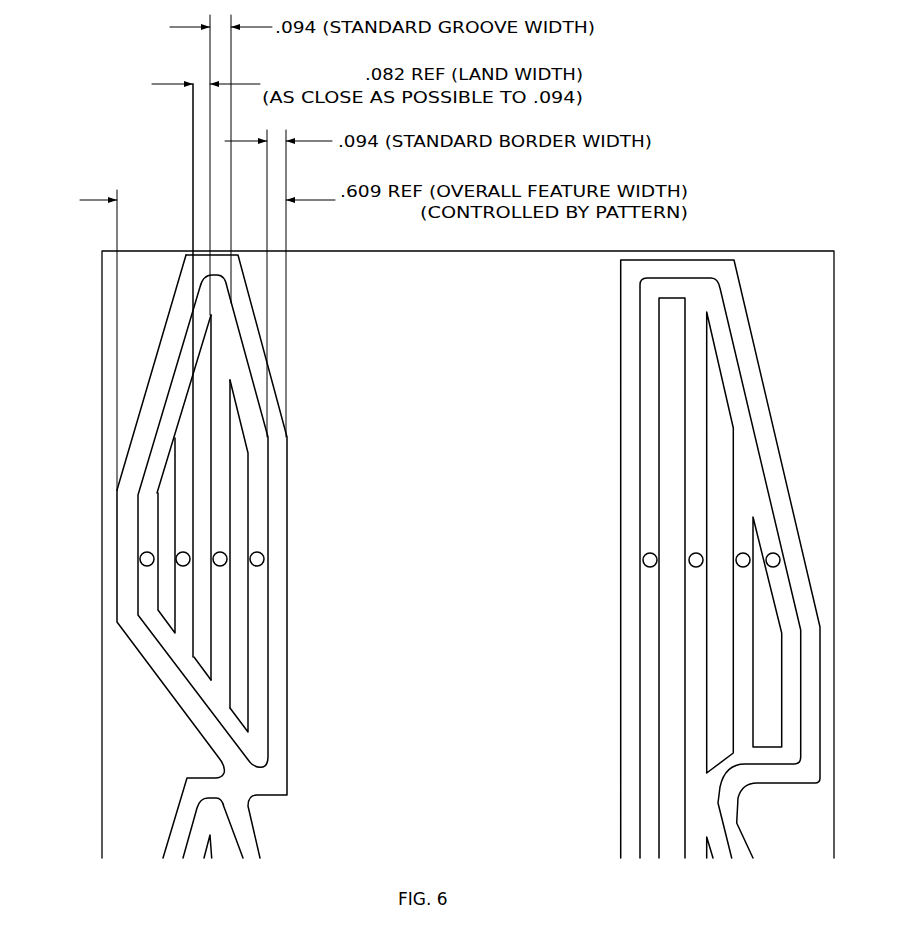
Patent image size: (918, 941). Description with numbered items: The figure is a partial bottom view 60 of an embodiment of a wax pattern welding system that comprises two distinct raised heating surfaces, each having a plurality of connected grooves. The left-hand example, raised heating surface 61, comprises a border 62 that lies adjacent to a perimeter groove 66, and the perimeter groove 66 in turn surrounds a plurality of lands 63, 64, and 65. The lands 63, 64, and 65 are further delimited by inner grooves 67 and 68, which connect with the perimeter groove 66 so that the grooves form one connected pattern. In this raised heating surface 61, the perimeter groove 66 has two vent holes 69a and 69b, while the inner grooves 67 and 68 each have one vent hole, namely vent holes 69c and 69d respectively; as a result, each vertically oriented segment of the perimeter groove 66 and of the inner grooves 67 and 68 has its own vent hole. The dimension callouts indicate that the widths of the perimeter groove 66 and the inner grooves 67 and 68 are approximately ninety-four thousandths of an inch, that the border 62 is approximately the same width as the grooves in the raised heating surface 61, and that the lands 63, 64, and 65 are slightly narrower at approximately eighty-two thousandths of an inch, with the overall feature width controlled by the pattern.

The partial bottom view 60 is at (707, 251).
The raised heating surface 61 is at (183, 713).
The border 62 is at (162, 665).
The land 63 is at (165, 512).
The land 64 is at (203, 468).
The land 65 is at (237, 460).
The perimeter groove 66 is at (258, 498).
The inner groove 67 is at (215, 625).
The inner groove 68 is at (187, 603).
The vent hole 69a is at (140, 556).
The vent hole 69b is at (264, 559).
The vent hole 69c is at (224, 562).
The vent hole 69d is at (190, 554).